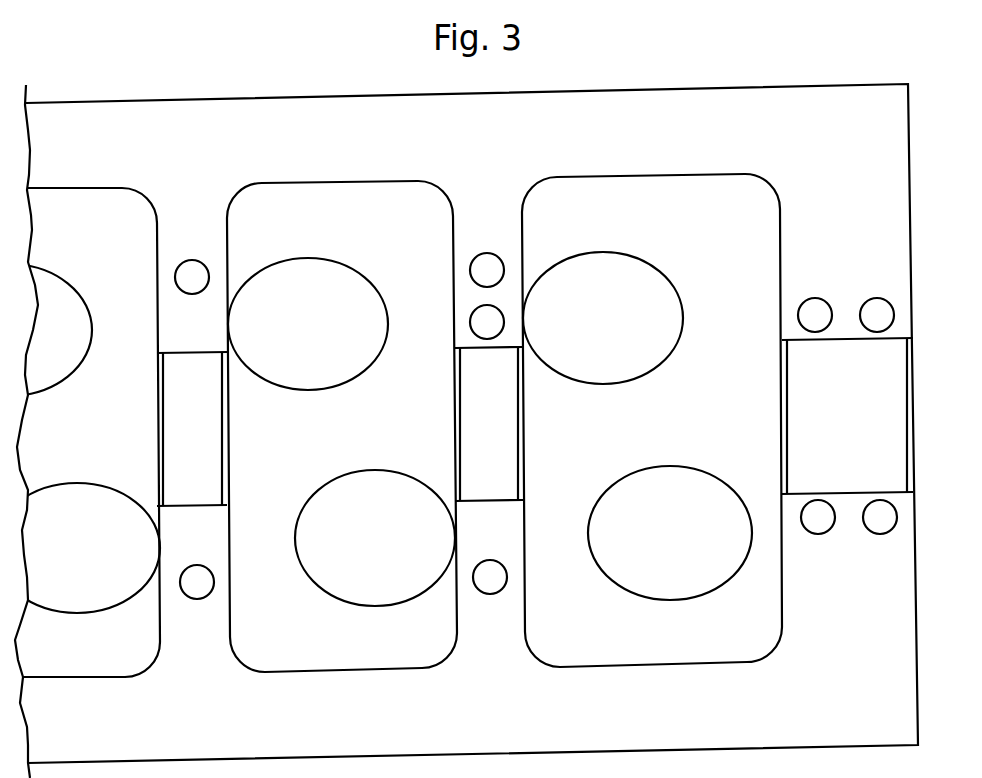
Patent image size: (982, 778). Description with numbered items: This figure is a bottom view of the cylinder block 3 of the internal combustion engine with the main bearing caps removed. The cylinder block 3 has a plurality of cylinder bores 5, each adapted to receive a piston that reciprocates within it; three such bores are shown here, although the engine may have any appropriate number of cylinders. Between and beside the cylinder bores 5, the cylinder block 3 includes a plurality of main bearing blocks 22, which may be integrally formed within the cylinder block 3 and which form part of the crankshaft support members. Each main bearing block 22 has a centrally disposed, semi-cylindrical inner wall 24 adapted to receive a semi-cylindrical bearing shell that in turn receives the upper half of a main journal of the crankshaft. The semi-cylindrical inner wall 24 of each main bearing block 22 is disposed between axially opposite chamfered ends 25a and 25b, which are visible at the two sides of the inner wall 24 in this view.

The cylinder block 3 is at (912, 634).
The cylinder bores 5 is at (366, 278).
The main bearing block 22 is at (222, 620).
The semi-cylindrical inner wall 24 is at (525, 422).
The chamfered end 25a is at (163, 438).
The chamfered end 25b is at (228, 430).